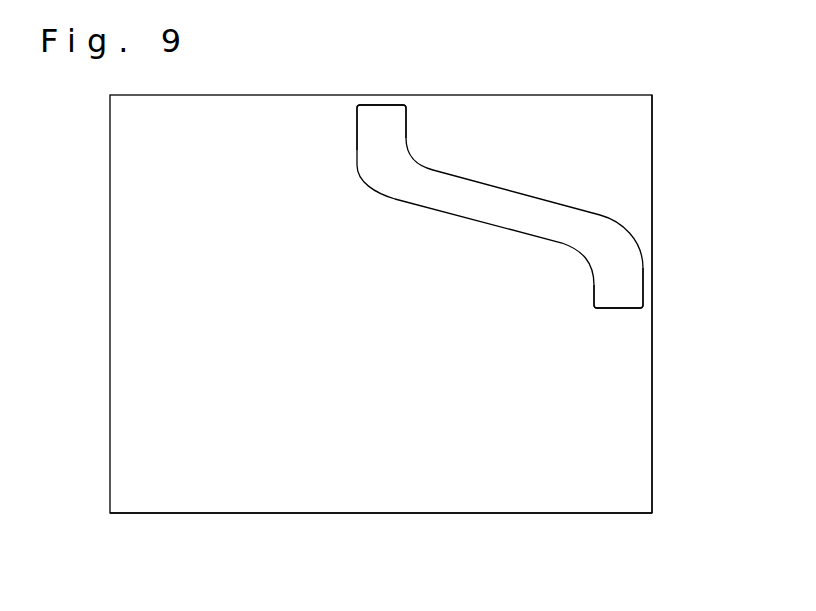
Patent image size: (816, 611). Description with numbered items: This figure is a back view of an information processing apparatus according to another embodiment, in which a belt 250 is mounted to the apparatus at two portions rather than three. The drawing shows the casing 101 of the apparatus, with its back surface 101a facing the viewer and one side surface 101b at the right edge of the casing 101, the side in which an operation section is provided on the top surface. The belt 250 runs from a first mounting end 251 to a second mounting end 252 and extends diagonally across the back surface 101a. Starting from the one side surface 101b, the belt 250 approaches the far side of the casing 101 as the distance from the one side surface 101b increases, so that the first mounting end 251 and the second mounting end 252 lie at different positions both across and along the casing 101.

The casing 101 is at (537, 513).
The back surface 101a is at (320, 483).
The side surface 101b is at (652, 457).
The belt 250 is at (543, 205).
The first mounting end 251 is at (407, 132).
The second mounting end 252 is at (643, 297).